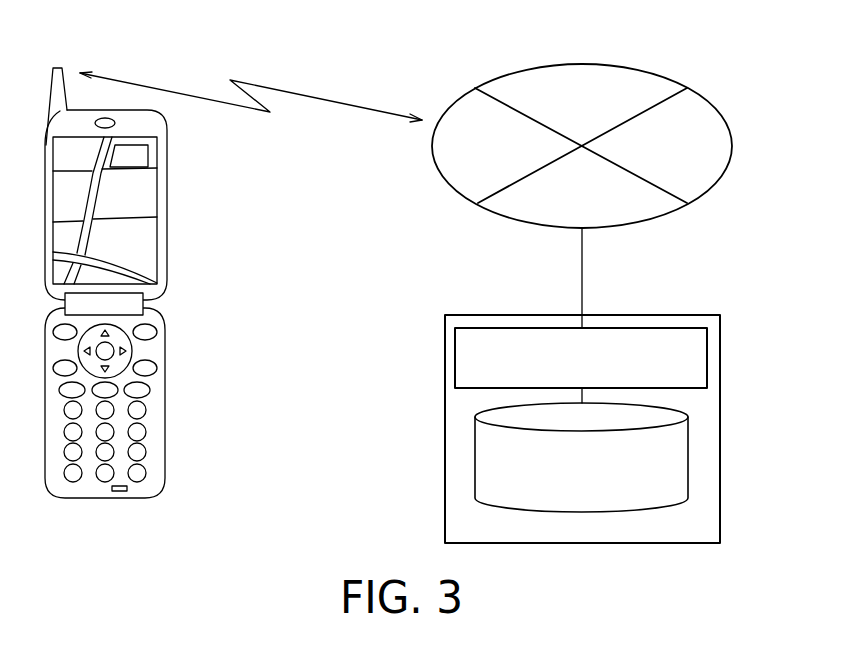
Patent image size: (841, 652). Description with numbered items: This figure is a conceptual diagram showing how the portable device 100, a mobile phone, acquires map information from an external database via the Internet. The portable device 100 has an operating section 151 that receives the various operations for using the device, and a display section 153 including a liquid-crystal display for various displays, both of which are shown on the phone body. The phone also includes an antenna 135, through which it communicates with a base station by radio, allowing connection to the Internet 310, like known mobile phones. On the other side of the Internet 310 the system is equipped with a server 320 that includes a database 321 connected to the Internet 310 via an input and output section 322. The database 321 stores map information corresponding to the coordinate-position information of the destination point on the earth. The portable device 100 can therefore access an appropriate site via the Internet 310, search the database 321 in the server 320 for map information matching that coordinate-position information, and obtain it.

The portable device 100 is at (167, 260).
The antenna 135 is at (49, 83).
The display section 153 is at (137, 203).
The operating section 151 is at (157, 422).
The Internet 310 is at (598, 63).
The server 320 is at (720, 358).
The database 321 is at (688, 450).
The input and output section 322 is at (658, 328).